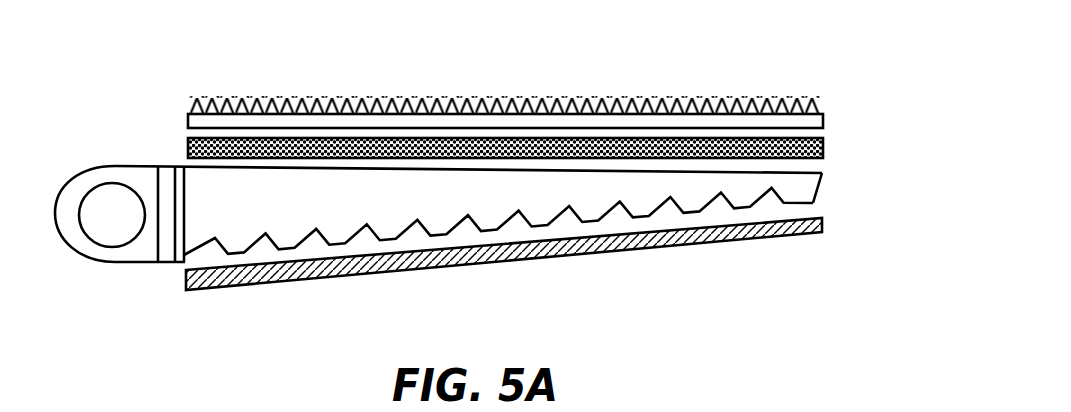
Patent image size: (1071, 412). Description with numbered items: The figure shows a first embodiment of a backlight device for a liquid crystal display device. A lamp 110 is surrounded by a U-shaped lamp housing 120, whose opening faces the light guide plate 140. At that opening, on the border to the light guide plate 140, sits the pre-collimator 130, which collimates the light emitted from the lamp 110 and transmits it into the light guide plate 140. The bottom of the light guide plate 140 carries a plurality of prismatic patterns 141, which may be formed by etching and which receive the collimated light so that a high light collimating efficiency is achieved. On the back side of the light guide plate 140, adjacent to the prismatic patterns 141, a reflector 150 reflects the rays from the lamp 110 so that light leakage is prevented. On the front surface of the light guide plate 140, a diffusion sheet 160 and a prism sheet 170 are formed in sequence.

The lamp 110 is at (101, 185).
The U-shaped lamp housing 120 is at (117, 265).
The pre-collimator 130 is at (163, 250).
The light guide plate 140 is at (542, 261).
The prismatic patterns 141 is at (470, 222).
The reflector 150 is at (822, 222).
The diffusion sheet 160 is at (823, 147).
The prism sheet 170 is at (836, 98).